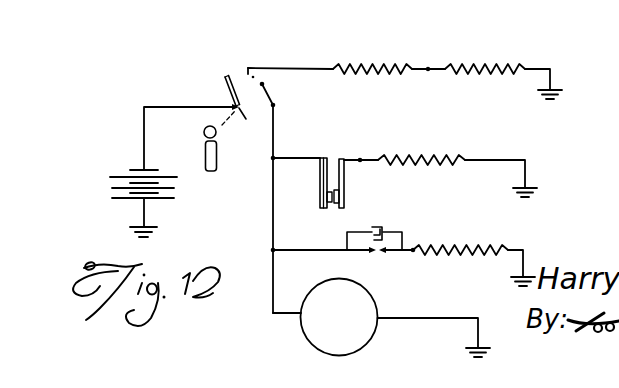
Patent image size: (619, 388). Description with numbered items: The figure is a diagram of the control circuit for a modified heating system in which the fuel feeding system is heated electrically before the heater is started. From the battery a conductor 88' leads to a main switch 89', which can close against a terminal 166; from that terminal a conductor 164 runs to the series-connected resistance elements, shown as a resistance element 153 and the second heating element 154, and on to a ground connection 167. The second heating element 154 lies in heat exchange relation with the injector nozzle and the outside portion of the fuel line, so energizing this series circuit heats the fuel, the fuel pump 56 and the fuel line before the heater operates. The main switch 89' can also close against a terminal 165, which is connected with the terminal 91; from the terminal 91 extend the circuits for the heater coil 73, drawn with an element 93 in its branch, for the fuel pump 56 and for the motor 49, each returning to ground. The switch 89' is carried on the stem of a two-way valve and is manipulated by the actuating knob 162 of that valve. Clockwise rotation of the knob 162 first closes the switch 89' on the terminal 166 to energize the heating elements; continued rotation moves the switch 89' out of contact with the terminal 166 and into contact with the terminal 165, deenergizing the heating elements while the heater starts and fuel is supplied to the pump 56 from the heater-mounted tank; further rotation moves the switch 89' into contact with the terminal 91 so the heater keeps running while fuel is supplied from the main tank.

The conductor 164 is at (293, 67).
The resistor 153 is at (373, 68).
The second heating element 154 is at (463, 71).
The ground connection 167 is at (540, 70).
The terminal 166 is at (248, 73).
The conductor 88' is at (174, 150).
The main switch 89' is at (244, 110).
The actuating knob 162 is at (214, 141).
The terminal 165 is at (264, 85).
The terminal 91 is at (274, 106).
The relay contacts 93 is at (337, 154).
The heater coil 73 is at (417, 160).
The fuel pump 56 is at (460, 250).
The motor 49 is at (375, 338).